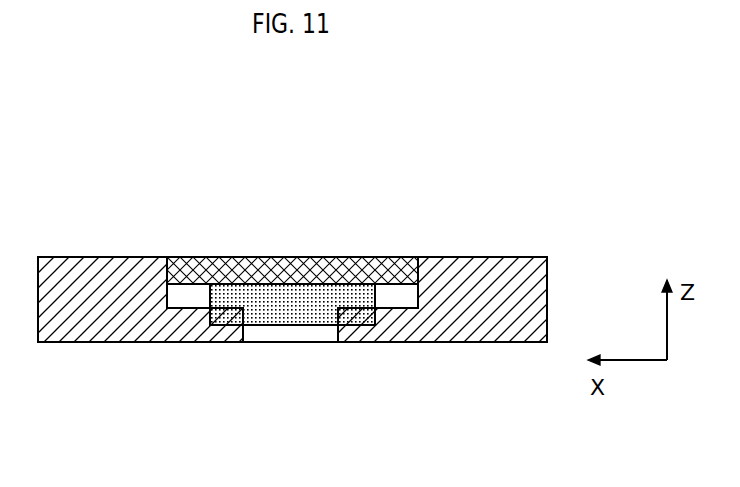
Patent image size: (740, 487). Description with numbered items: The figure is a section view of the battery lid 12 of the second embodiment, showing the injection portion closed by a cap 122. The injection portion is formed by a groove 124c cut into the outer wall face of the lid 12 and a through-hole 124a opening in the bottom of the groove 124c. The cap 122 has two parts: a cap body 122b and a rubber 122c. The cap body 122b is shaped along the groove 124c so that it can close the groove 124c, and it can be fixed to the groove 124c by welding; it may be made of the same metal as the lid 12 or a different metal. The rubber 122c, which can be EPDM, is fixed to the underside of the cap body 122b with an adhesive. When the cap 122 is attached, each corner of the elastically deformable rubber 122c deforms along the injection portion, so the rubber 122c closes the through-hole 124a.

The lid 12 is at (328, 278).
The cap 122 is at (292, 231).
The cap body 122b is at (250, 267).
The rubber 122c is at (307, 303).
The through-hole 124a is at (292, 335).
The groove 124c is at (182, 298).